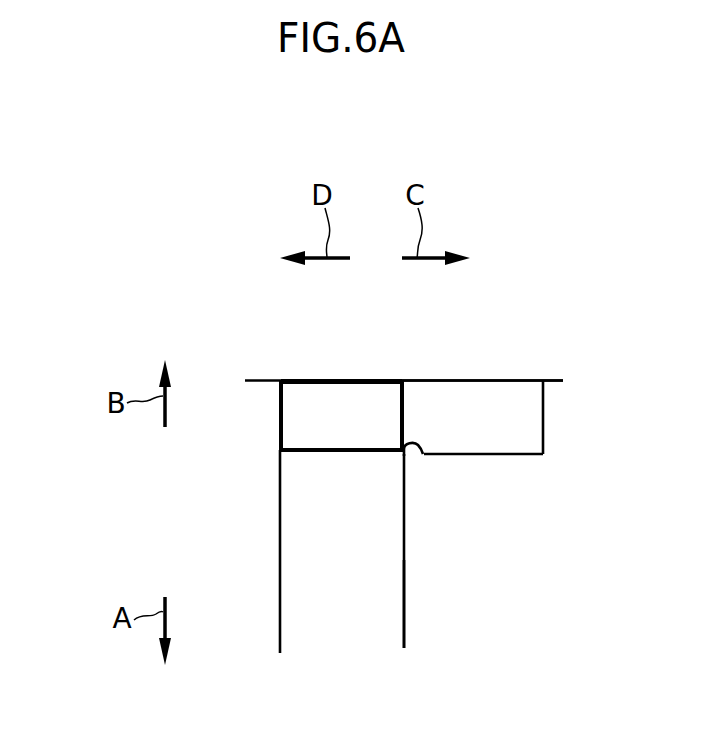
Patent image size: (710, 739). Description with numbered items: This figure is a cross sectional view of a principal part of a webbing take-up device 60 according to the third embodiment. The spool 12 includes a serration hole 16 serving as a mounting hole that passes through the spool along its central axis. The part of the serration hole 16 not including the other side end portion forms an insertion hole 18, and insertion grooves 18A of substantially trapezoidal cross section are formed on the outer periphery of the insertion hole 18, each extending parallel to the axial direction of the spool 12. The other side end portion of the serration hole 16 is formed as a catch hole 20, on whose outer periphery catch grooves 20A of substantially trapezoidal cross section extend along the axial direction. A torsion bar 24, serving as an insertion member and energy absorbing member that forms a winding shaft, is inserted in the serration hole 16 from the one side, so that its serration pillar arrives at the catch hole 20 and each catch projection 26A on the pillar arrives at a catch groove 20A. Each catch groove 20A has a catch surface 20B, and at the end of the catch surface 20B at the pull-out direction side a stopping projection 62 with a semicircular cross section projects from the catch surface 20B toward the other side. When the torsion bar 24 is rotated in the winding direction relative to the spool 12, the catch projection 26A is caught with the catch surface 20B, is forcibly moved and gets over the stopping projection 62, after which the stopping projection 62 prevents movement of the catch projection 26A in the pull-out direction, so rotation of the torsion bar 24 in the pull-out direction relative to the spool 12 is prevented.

The webbing take-up device 60 is at (183, 201).
The spool 12 is at (252, 380).
The torsion bar 24 is at (303, 380).
The catch projection 26A is at (352, 380).
The catch hole 20 is at (437, 390).
The catch groove 20A is at (545, 406).
The catch surface 20B is at (476, 456).
The stopping projection 62 is at (418, 445).
The insertion hole 18 is at (307, 534).
The insertion groove 18A is at (404, 557).
The serration hole 16 is at (382, 607).